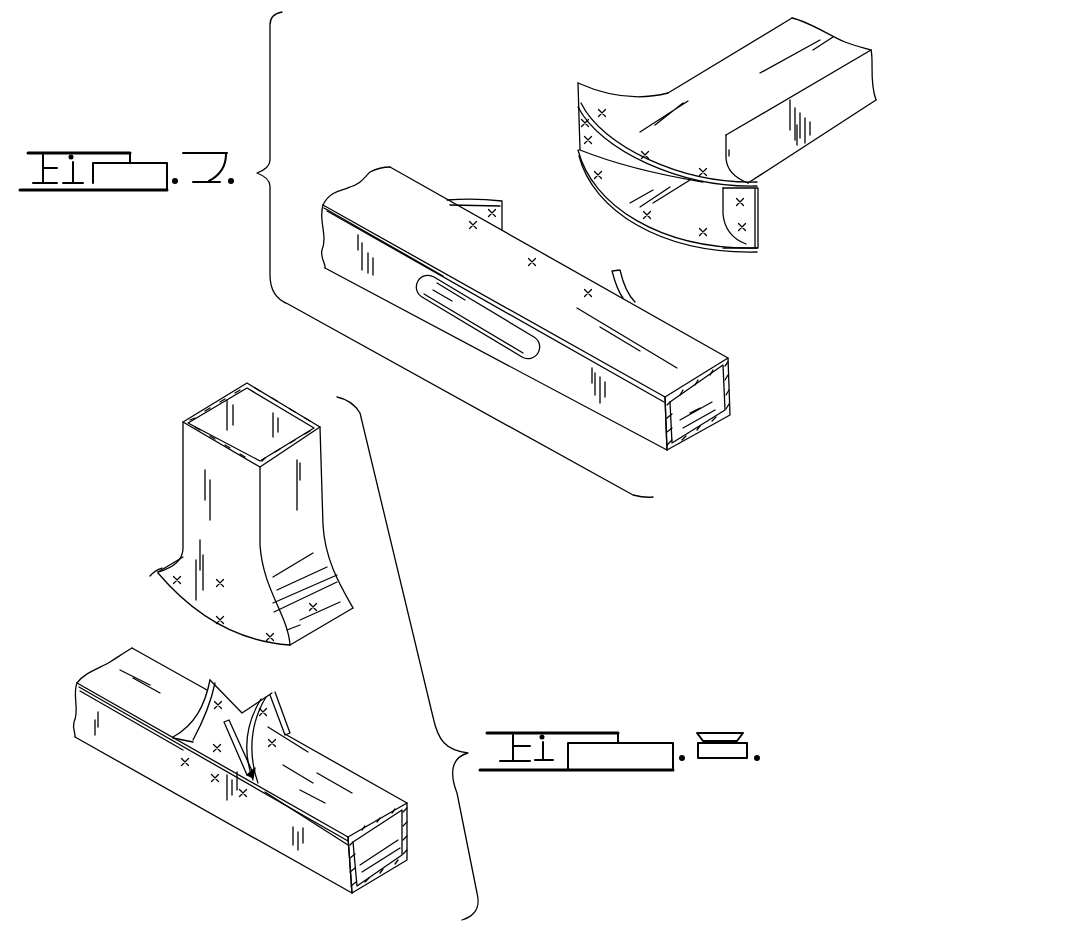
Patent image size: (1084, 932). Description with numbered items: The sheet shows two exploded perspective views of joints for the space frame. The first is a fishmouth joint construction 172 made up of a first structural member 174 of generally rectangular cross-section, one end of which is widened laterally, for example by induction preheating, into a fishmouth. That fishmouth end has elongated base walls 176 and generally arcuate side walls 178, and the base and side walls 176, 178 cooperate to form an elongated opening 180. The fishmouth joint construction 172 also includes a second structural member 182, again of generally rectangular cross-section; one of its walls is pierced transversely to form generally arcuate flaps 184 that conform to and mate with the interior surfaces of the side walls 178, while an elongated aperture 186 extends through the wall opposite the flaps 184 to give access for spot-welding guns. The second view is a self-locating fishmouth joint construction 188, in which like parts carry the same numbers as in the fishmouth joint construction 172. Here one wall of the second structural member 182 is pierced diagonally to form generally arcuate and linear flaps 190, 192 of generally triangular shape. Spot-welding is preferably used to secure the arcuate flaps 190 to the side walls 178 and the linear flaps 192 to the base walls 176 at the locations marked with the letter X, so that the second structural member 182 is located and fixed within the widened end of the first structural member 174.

In FIG. 7, the fishmouth joint construction 172 is at (473, 99).
In FIG. 7, the first structural member 174 is at (797, 150).
In FIG. 8, the first structural member 174 is at (182, 455).
In FIG. 7, the elongated base walls 176 is at (617, 133).
In FIG. 8, the elongated base walls 176 is at (235, 633).
In FIG. 7, the arcuate side walls 178 is at (580, 133).
In FIG. 8, the arcuate side walls 178 is at (158, 568).
In FIG. 7, the elongated opening 180 is at (642, 187).
In FIG. 7, the second structural member 182 is at (360, 280).
In FIG. 8, the second structural member 182 is at (92, 748).
In FIG. 7, the arcuate flaps 184 is at (470, 200).
In FIG. 7, the elongated aperture 186 is at (535, 343).
In FIG. 8, the self-locating fishmouth joint construction 188 is at (97, 528).
In FIG. 8, the arcuate flaps 190 is at (203, 700).
In FIG. 8, the linear flaps 192 is at (277, 702).